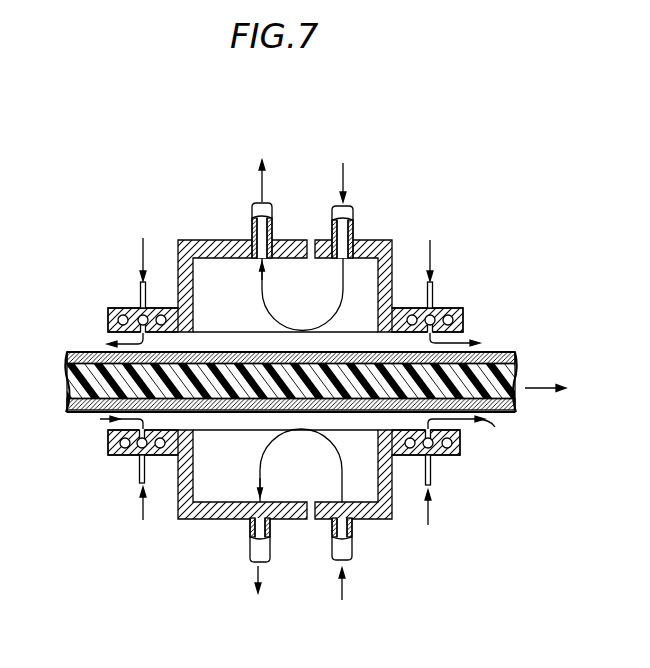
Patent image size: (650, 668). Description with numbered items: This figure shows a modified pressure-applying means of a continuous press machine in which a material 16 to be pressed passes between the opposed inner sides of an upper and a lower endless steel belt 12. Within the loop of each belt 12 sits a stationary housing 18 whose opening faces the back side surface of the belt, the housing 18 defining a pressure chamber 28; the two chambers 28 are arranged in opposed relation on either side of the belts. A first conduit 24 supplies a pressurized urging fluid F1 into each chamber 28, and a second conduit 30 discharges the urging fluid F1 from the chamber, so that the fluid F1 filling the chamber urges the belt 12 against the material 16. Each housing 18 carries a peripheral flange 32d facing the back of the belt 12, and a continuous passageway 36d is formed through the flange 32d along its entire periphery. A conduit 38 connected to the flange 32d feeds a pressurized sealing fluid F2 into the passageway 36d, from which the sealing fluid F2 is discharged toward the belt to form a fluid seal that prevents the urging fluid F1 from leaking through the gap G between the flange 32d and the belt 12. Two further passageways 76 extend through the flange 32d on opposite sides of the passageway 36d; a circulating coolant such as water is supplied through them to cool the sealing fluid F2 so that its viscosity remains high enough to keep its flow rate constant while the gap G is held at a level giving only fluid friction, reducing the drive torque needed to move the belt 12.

The endless steel belt 12 is at (514, 352).
The material 16 is at (524, 376).
The housing 18 is at (223, 243).
The first conduit 24 is at (332, 225).
The pressure chamber 28 is at (243, 310).
The second conduit 30 is at (252, 220).
The peripheral flange 32d is at (115, 310).
The continuous passageway 36d is at (150, 318).
The conduit 38 is at (141, 298).
The passageway 76 is at (122, 315).
The pressurized urging fluid F1 is at (299, 382).
The pressurized sealing fluid F2 is at (286, 381).
The gap G is at (112, 342).